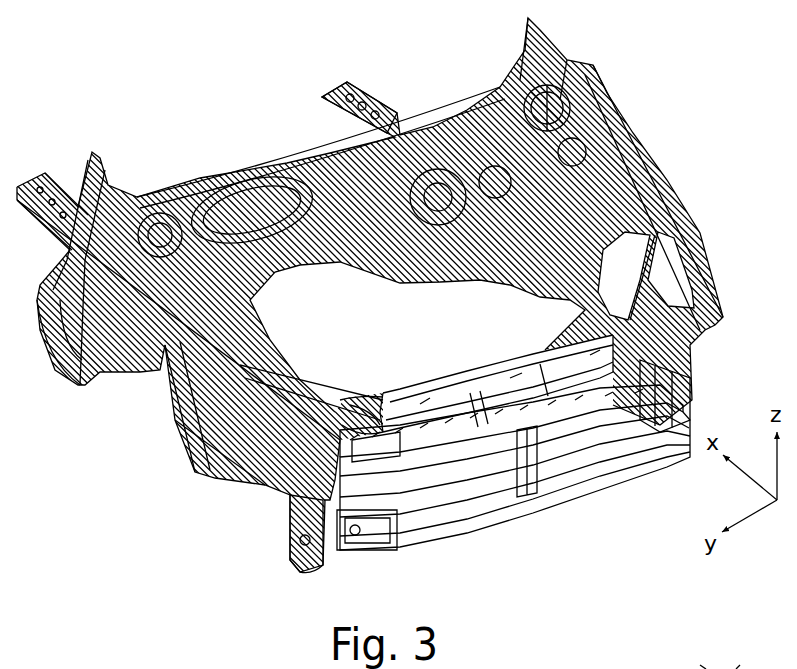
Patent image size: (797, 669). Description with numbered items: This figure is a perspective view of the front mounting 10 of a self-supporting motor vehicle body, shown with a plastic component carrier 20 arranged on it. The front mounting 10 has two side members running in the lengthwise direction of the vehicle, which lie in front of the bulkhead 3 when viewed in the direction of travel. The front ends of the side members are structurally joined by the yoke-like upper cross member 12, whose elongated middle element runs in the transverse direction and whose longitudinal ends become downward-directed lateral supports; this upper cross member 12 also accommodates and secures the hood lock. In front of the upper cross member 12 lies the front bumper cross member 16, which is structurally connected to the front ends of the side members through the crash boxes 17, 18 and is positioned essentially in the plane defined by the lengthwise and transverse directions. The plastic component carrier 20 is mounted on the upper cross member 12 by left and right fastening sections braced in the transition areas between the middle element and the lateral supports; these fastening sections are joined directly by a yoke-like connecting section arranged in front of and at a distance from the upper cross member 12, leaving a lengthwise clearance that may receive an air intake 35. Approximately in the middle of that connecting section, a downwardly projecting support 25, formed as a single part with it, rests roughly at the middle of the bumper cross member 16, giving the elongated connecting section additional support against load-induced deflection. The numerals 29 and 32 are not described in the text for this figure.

The front mounting 10 is at (398, 334).
The bulkhead 3 is at (277, 173).
The air intake 35 is at (367, 400).
The upper cross member 12 is at (420, 405).
The plastic component carrier 20 is at (490, 410).
The crash box 18 is at (662, 397).
The support 25 is at (537, 448).
The crash box 17 is at (392, 495).
The front bumper cross member 16 is at (487, 520).
The connecting element 29 is at (705, 668).
The connecting element 32 is at (738, 668).